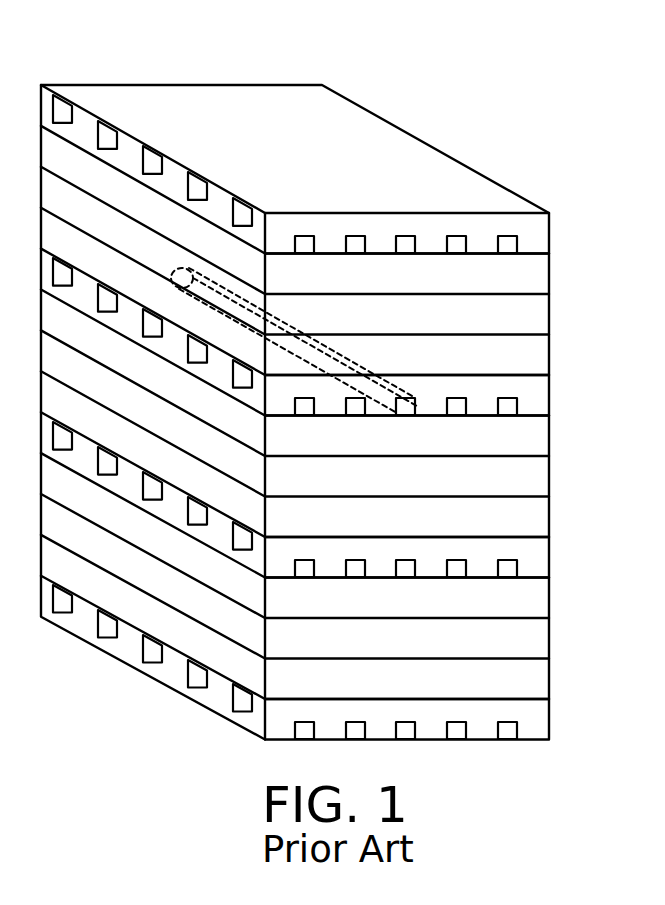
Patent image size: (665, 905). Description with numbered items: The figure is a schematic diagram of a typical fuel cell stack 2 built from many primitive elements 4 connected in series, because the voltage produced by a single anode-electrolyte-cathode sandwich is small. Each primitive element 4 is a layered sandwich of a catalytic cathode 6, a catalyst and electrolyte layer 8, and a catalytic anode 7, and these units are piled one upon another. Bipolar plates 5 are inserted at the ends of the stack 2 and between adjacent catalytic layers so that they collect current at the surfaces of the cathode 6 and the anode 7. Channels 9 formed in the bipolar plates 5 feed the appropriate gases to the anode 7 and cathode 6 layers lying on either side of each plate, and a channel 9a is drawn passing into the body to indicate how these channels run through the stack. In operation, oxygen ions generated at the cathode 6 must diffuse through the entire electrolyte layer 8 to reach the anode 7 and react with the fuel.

The stack 2 is at (550, 113).
The primitive element 4 is at (590, 257).
The bipolar plate 5 is at (549, 233).
The cathode 6 is at (549, 355).
The anode 7 is at (549, 274).
The electrolyte layer 8 is at (549, 314).
The channels 9 is at (241, 548).
The channel 9a is at (408, 414).